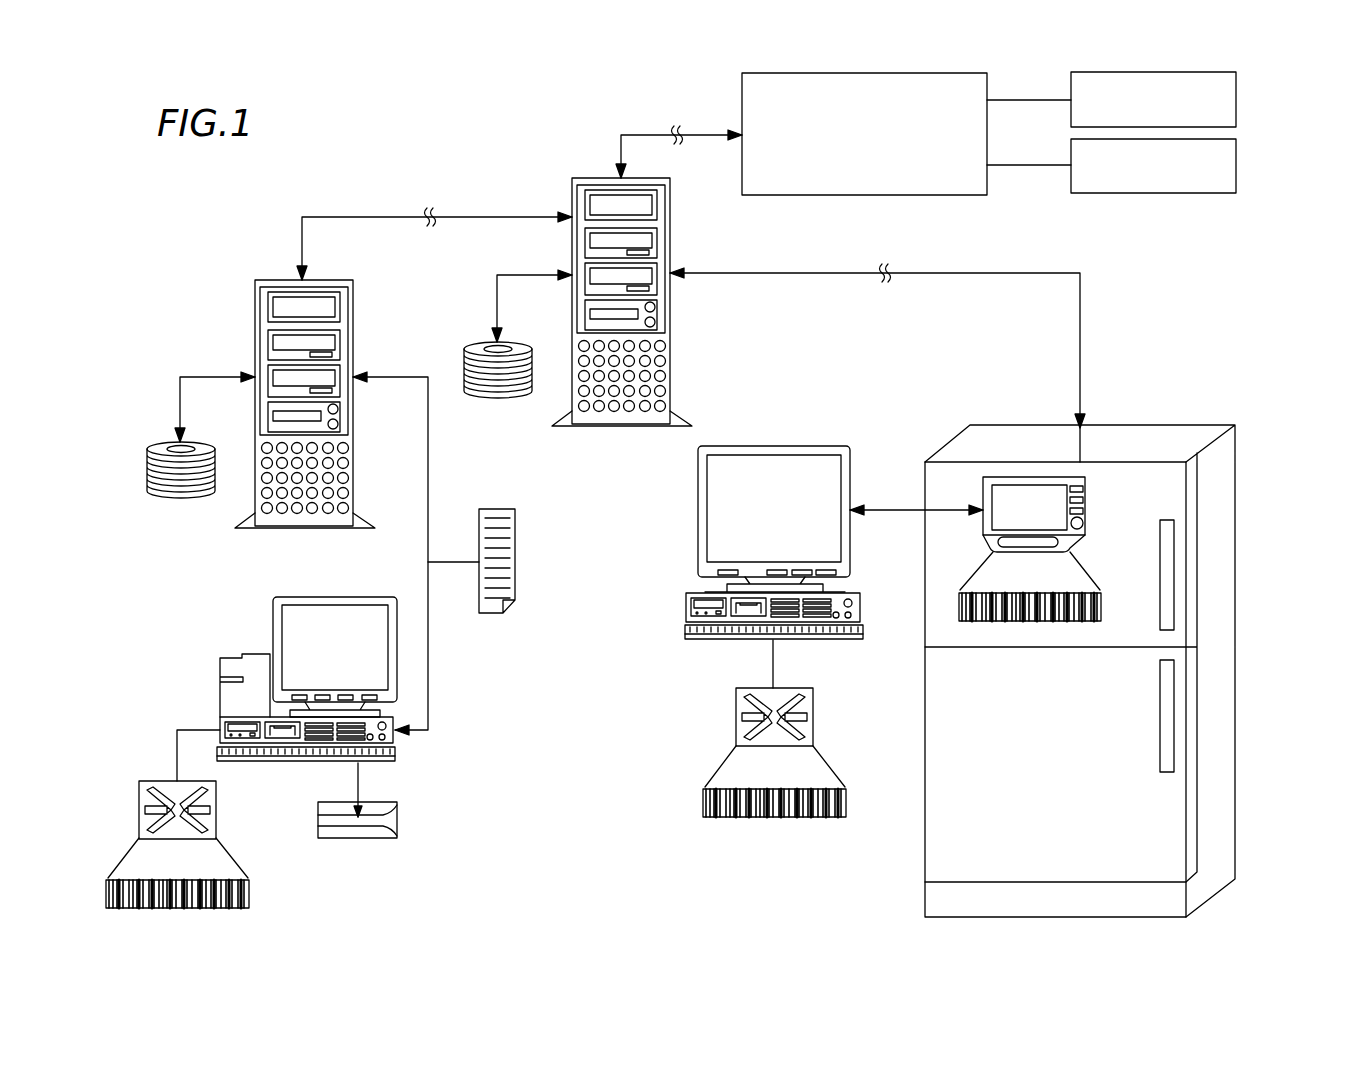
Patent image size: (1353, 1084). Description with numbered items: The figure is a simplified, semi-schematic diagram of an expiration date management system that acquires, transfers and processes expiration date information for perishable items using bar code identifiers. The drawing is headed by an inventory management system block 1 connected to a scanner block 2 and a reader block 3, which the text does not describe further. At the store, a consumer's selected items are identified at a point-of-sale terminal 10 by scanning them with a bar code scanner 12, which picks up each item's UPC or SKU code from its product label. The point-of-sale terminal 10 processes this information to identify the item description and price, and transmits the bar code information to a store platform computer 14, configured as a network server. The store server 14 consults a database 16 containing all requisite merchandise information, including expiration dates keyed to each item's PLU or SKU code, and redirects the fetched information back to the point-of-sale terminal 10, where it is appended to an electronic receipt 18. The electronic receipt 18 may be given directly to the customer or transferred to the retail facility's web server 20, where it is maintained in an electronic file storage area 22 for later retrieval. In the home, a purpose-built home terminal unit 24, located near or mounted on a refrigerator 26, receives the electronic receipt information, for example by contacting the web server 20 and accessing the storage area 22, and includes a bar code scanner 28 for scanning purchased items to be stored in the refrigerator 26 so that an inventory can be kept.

The inventory management system 1 is at (742, 93).
The scanner 2 is at (1237, 96).
The reader 3 is at (1237, 163).
The point-of-sale terminal 10 is at (300, 630).
The bar code scanner 12 is at (163, 781).
The store platform computer 14 is at (255, 314).
The database 16 is at (176, 494).
The electronic receipt 18 is at (515, 542).
The web server 20 is at (670, 230).
The electronic file storage area 22 is at (466, 346).
The home terminal unit 24 is at (712, 505).
The refrigerator 26 is at (948, 855).
The bar code scanner 28 is at (736, 707).